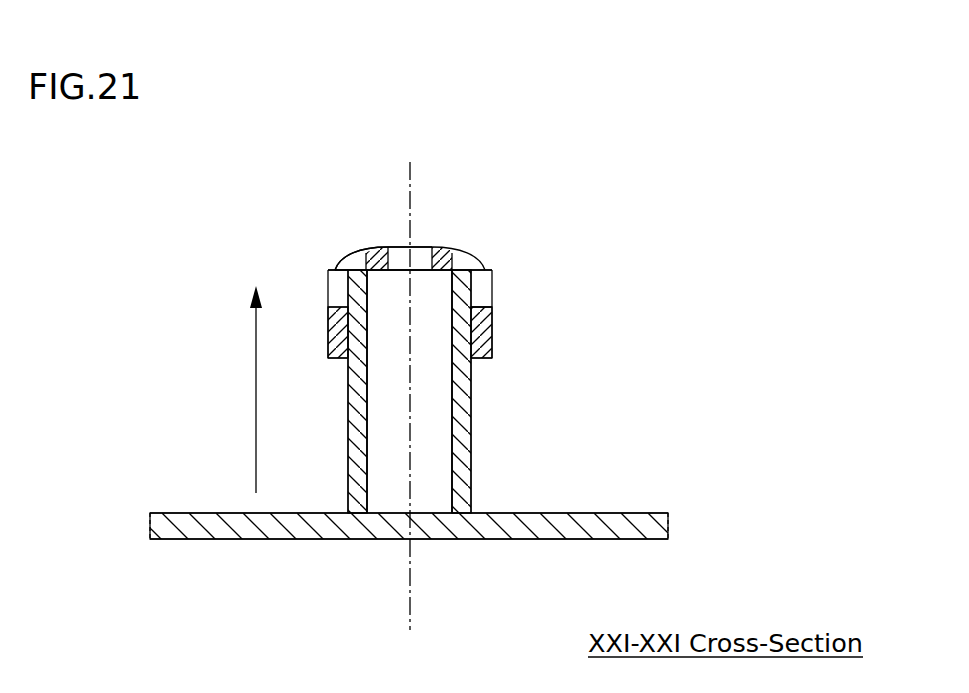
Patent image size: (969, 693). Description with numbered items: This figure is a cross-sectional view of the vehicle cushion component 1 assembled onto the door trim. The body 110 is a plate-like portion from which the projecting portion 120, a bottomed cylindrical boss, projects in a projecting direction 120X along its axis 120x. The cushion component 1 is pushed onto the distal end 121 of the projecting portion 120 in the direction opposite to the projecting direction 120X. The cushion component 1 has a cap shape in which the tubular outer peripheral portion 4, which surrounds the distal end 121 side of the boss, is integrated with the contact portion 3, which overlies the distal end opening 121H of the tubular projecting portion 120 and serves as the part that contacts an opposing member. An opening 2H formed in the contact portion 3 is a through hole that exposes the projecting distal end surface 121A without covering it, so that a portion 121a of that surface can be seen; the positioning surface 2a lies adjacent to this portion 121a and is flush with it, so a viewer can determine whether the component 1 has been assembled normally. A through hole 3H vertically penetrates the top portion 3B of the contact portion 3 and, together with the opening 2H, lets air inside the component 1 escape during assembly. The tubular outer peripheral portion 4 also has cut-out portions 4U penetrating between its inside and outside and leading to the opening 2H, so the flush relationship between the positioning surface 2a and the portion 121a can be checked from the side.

The vehicle cushion component 1 is at (317, 217).
The opening 2H is at (345, 258).
The positioning surface 2a is at (340, 259).
The contact portion 3 is at (422, 196).
The through hole 3H is at (402, 257).
The top portion 3B is at (420, 257).
The tubular outer peripheral portion 4 is at (490, 327).
The cut-out portions 4U is at (480, 291).
The body 110 is at (536, 512).
The projecting portion 120 is at (462, 430).
The projecting direction 120X is at (253, 368).
The axis 120x is at (410, 596).
The distal end 121 is at (490, 273).
The portion of projecting distal end surface 121a is at (366, 257).
The projecting distal end surface 121A is at (422, 196).
The distal end opening 121H is at (368, 343).